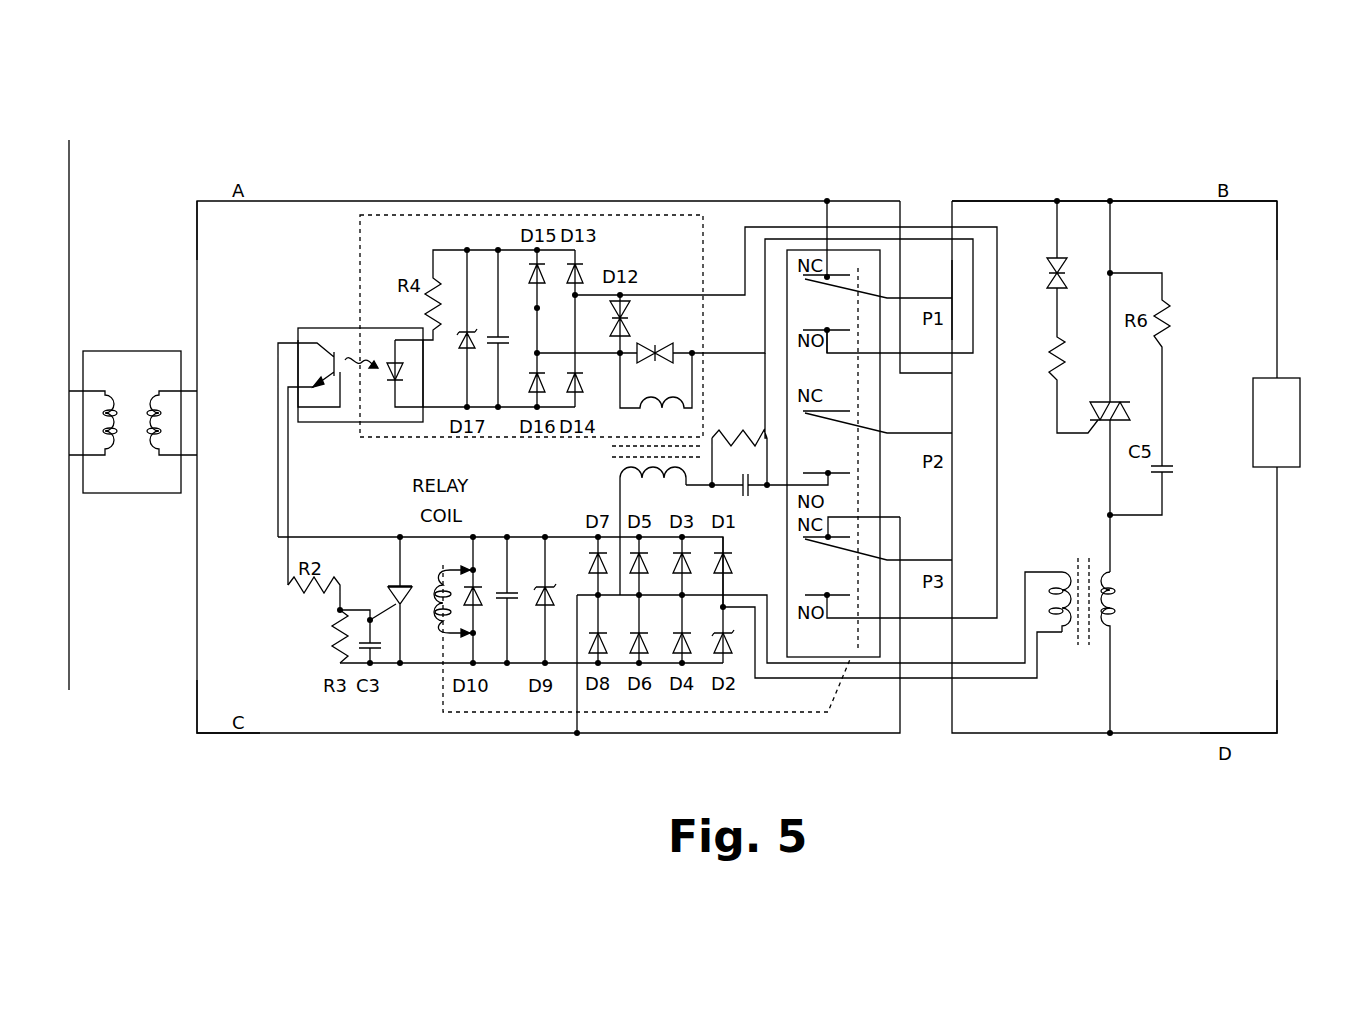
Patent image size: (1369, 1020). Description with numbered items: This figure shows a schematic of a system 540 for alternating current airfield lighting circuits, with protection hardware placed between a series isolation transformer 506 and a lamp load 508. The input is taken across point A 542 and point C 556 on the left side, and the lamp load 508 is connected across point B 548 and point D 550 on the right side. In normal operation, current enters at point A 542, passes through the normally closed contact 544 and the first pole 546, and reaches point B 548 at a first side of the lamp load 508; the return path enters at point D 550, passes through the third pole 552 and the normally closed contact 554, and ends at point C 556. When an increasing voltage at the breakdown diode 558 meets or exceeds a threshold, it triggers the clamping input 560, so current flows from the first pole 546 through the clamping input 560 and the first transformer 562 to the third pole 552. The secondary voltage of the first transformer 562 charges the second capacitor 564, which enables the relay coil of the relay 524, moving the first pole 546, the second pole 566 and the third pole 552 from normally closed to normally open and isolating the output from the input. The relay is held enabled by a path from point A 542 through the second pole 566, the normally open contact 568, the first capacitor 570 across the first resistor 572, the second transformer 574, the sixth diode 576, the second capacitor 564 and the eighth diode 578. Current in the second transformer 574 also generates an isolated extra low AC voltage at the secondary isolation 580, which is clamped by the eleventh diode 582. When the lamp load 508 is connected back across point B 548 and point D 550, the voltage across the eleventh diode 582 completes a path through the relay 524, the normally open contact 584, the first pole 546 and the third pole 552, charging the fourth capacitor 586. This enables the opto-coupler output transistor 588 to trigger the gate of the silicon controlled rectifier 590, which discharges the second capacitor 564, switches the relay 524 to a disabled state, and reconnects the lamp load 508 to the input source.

The series isolation transformer 506 is at (129, 351).
The lamp load 508 is at (1300, 393).
The relay RLY-1 524 is at (877, 657).
The system 540 is at (1142, 57).
The point A 542 is at (199, 201).
The N/C 544 is at (830, 277).
The pole P1 546 is at (952, 298).
The point B 548 is at (1262, 201).
The point D 550 is at (1252, 735).
The P3 552 is at (953, 560).
The N/C 554 is at (828, 537).
The point C 556 is at (212, 735).
The diode D18 558 is at (1042, 278).
The clamping input U1 560 is at (1130, 410).
The transformer T1 562 is at (1118, 602).
The capacitor C2 564 is at (508, 590).
The pole P2 566 is at (952, 433).
The N/O 568 is at (828, 473).
The capacitor C1 570 is at (745, 497).
The resistor R1 572 is at (747, 428).
The transistor T2 574 is at (615, 464).
The diode D6 576 is at (645, 665).
The diode D8 578 is at (600, 665).
The secondary isolation 580 is at (636, 215).
The diode D11 582 is at (667, 342).
The N/O 584 is at (827, 330).
The capacitor C4 586 is at (488, 333).
The Opto-coupler U2 output transistor 588 is at (325, 328).
The silicon controlled rectifier U3 590 is at (405, 606).